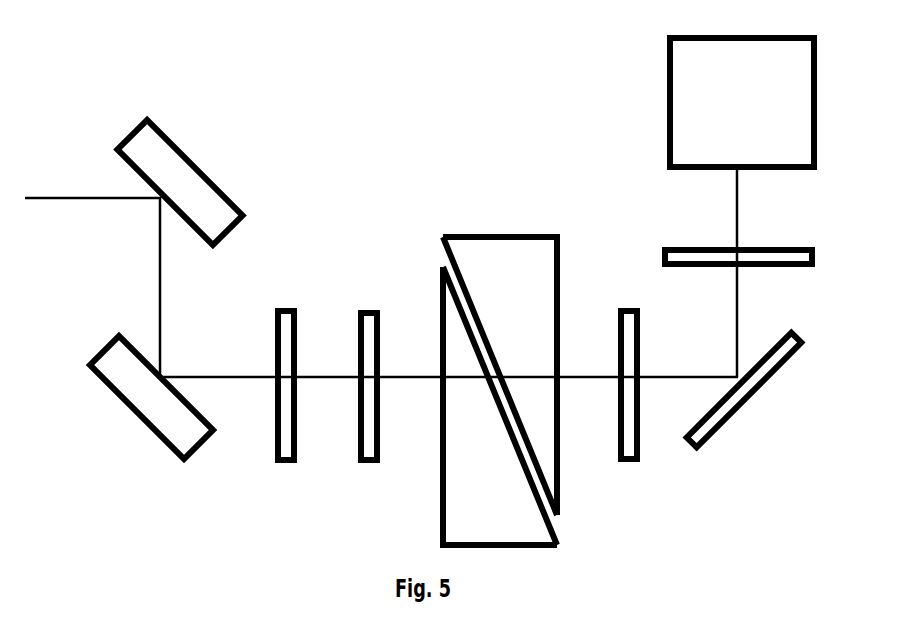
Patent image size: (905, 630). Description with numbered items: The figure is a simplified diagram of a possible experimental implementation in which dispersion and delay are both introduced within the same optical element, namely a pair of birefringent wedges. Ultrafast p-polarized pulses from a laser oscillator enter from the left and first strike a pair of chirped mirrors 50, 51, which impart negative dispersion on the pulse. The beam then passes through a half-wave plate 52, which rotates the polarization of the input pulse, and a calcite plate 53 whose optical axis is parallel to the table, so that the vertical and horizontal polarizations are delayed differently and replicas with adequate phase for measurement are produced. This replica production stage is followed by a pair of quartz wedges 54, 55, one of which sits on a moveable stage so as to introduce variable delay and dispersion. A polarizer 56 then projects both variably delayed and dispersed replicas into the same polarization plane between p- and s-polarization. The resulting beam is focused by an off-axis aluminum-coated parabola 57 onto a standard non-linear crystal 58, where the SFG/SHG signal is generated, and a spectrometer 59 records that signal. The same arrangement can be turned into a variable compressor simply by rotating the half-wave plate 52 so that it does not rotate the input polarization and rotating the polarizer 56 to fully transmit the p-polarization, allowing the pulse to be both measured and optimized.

The chirped mirror 50 is at (179, 182).
The chirped mirror 51 is at (151, 397).
The half-wave plate 52 is at (286, 402).
The calcite plate 53 is at (369, 403).
The quartz wedge 54 is at (485, 393).
The quartz wedge 55 is at (517, 389).
The polarizer 56 is at (629, 401).
The off-axis aluminum-coated parabola 57 is at (744, 390).
The non-linear crystal 58 is at (739, 241).
The spectrometer 59 is at (723, 102).